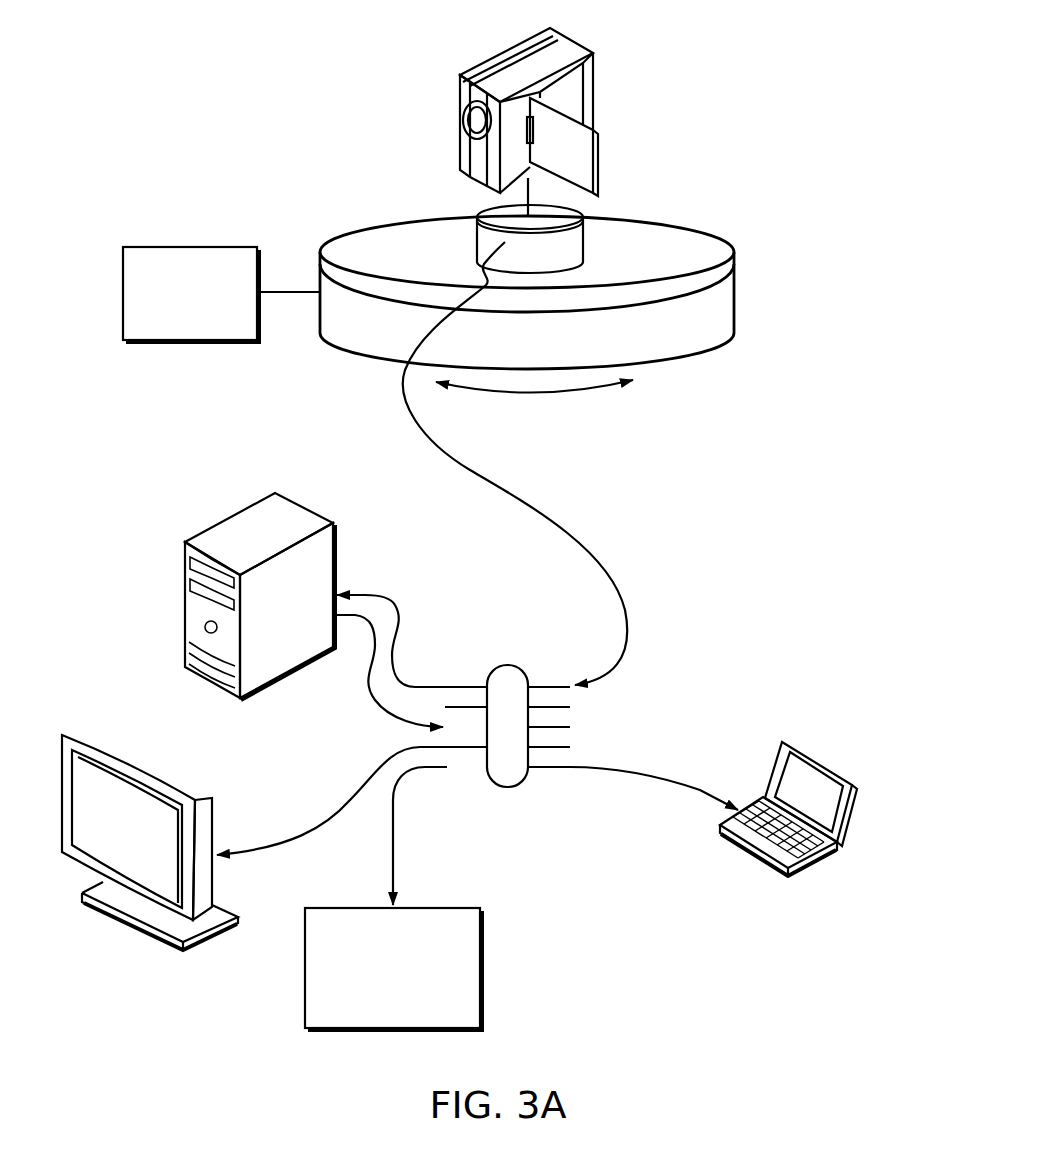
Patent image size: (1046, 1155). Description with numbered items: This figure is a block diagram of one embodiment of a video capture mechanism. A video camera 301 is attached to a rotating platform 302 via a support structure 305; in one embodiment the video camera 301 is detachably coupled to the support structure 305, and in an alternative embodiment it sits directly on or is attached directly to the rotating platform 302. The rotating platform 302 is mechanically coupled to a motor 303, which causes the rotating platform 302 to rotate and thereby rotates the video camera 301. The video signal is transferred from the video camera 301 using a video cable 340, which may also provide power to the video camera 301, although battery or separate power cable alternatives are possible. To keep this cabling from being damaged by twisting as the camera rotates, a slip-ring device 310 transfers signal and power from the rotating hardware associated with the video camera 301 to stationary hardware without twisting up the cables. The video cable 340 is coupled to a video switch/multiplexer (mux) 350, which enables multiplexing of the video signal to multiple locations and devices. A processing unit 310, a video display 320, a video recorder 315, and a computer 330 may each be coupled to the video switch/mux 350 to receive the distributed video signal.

The video camera 301 is at (587, 111).
The rotating platform 302 is at (580, 304).
The motor 303 is at (221, 294).
The support structure 305 is at (606, 199).
The slip-ring device / processing unit 310 is at (463, 200).
The video recorder 315 is at (409, 1013).
The video display 320 is at (254, 881).
The computer 330 is at (713, 842).
The video cable 340 is at (555, 463).
The video switch/multiplexer (mux) 350 is at (508, 773).